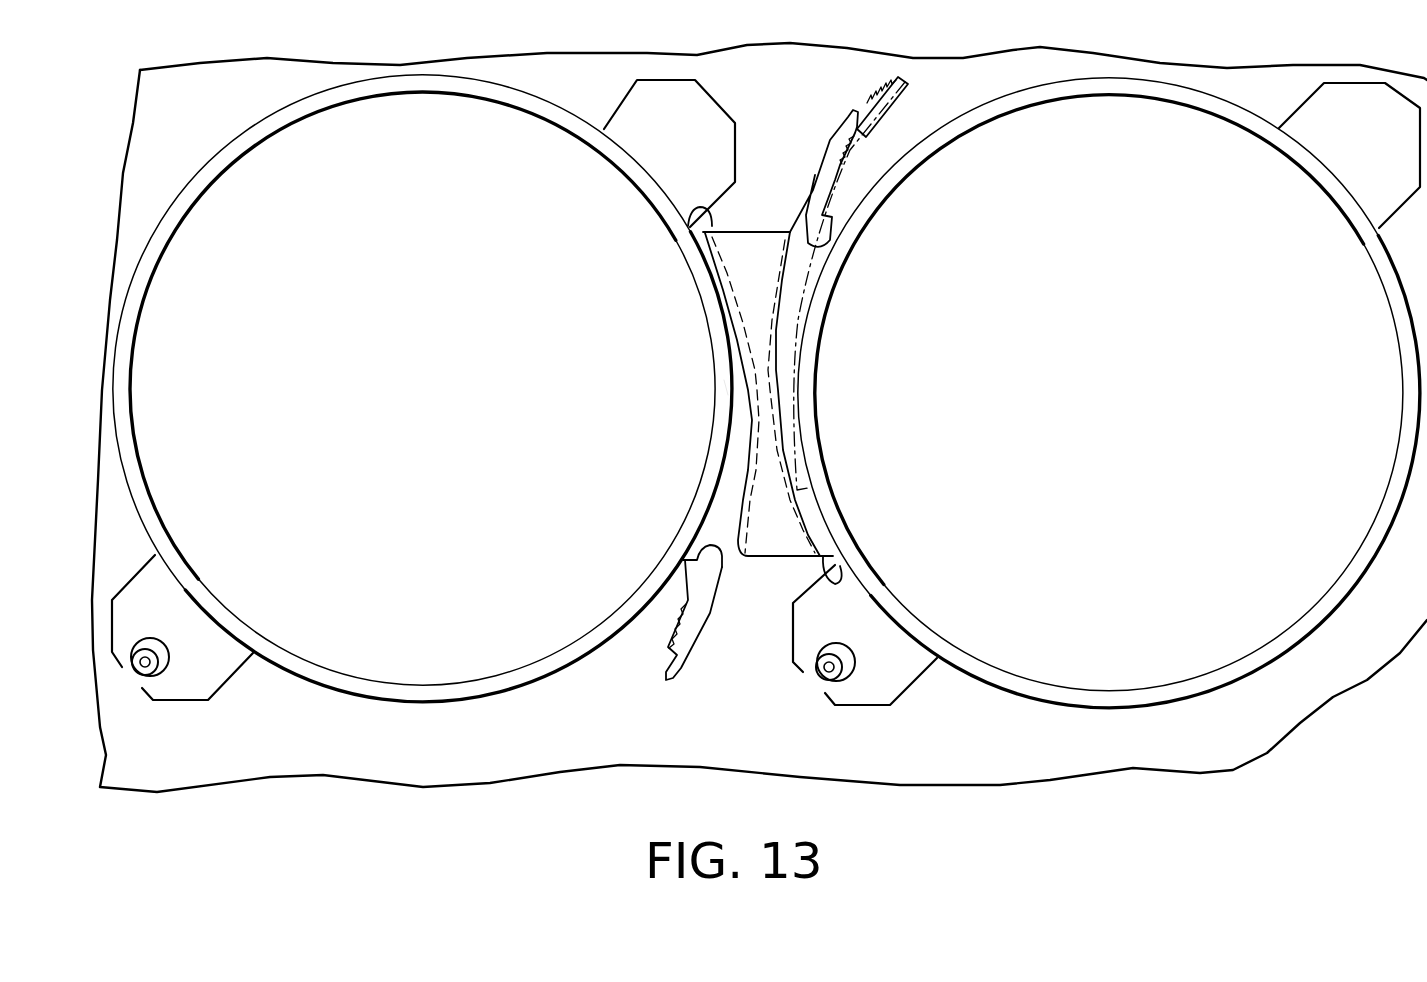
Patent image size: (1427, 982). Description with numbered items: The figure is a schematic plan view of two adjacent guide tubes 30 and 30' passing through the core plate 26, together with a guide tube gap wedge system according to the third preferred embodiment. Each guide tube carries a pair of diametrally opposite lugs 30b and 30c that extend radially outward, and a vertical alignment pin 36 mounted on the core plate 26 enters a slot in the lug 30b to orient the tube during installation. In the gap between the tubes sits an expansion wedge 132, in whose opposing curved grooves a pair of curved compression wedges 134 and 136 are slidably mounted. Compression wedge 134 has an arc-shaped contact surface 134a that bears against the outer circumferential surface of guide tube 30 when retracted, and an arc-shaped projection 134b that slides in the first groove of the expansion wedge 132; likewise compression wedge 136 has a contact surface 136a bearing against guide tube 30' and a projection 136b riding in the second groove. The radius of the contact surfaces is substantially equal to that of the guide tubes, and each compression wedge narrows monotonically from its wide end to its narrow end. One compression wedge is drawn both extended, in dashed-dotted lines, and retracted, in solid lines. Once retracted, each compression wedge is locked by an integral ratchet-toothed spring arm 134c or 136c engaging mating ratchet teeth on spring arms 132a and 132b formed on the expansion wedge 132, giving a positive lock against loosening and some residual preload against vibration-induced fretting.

The core plate 26 is at (549, 747).
The guide tube 30 is at (422, 388).
The guide tube 30' is at (1109, 393).
The guide tube lug 30b is at (709, 146).
The lug 30c is at (228, 671).
The vertical alignment pin 36 is at (130, 648).
The expansion wedge 132 is at (766, 391).
The spring arm 132a is at (692, 652).
The spring arm 132b is at (840, 133).
The curved compression wedge 134 is at (635, 409).
The arc-shaped contact surface 134a is at (727, 393).
The arc-shaped projection 134b is at (700, 217).
The spring arm 134c is at (686, 625).
The curved compression wedge 136 is at (878, 347).
The arc-shaped contact surface 136a is at (797, 390).
The arc-shaped projection 136b is at (840, 584).
The spring arm 136c is at (860, 160).